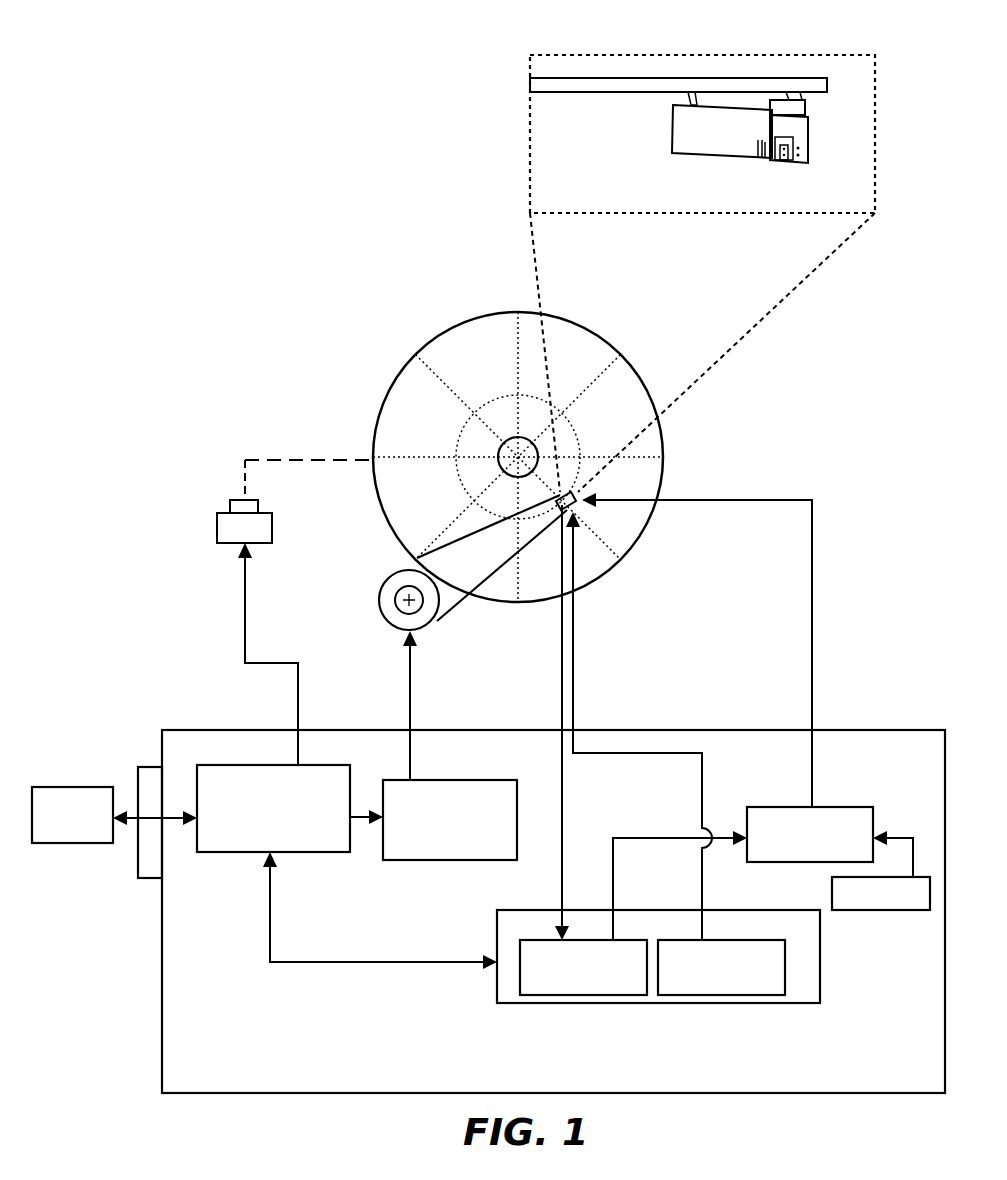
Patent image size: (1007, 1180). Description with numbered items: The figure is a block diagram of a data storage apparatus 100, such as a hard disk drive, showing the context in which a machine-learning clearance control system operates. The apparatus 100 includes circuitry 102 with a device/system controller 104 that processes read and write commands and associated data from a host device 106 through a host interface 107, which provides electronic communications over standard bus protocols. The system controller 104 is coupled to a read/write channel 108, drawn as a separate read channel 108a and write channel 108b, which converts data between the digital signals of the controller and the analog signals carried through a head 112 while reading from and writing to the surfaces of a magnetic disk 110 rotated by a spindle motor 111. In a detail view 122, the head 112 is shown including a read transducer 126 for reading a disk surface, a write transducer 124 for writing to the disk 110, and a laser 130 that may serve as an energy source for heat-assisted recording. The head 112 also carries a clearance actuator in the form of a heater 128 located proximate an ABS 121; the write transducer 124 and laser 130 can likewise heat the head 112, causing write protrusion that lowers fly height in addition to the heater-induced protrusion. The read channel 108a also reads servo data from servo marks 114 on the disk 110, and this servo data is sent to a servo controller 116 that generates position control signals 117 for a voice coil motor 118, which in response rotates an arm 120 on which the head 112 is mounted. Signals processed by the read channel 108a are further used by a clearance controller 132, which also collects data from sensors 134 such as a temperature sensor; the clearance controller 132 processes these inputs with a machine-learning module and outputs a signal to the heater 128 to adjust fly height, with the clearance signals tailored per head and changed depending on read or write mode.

The data storage apparatus 100 is at (178, 459).
The circuitry 102 is at (167, 728).
The device/system controller 104 is at (226, 765).
The host device 106 is at (63, 787).
The host interface 107 is at (143, 873).
The read/write channel 108 is at (677, 1003).
The read channel 108a is at (575, 995).
The write channel 108b is at (745, 995).
The magnetic disk 110 is at (422, 342).
The spindle motor 111 is at (217, 527).
The head 112 is at (810, 128).
The servo marks 114 is at (432, 372).
The servo controller 116 is at (470, 780).
The position control signals 117 is at (410, 695).
The voice coil motor 118 is at (378, 603).
The arm 120 is at (570, 78).
The ABS 121 is at (797, 165).
The detail view 122 is at (530, 138).
The write transducer 124 is at (810, 157).
The read transducer 126 is at (756, 150).
The heater 128 is at (768, 160).
The laser 130 is at (787, 100).
The clearance controller 132 is at (780, 807).
The sensors 134 is at (870, 910).